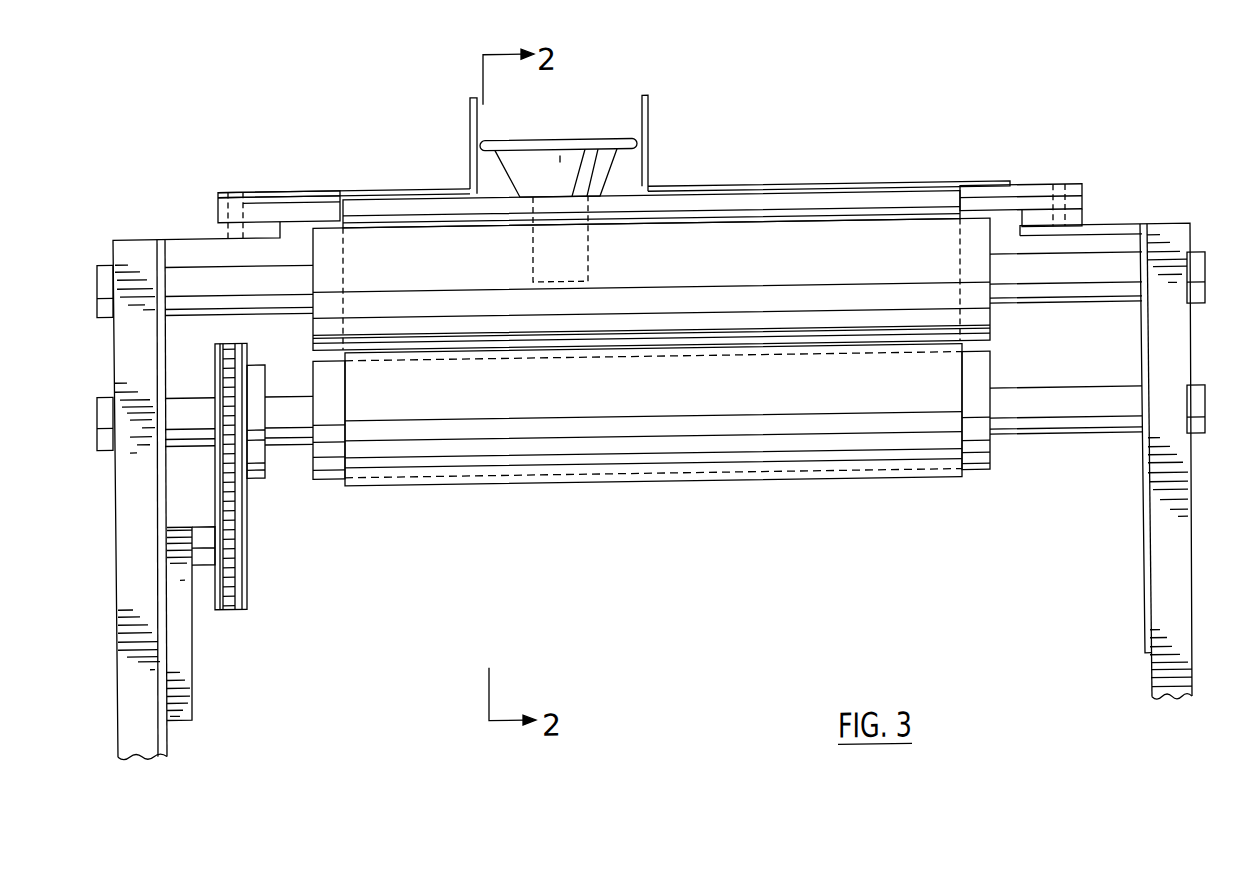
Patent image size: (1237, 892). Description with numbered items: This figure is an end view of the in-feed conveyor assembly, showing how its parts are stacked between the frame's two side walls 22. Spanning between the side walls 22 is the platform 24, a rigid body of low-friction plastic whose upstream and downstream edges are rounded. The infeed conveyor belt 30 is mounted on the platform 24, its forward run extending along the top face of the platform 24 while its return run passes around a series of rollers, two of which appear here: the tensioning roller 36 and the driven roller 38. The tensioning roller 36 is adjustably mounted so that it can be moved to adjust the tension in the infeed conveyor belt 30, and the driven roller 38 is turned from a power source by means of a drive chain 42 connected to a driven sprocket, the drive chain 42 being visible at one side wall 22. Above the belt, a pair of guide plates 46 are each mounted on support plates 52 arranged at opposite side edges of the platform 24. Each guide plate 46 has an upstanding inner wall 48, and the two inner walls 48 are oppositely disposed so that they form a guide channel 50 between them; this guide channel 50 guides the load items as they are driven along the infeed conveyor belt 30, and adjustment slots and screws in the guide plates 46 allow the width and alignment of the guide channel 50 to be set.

The side walls 22 is at (128, 670).
The platform 24 is at (1045, 216).
The infeed conveyor belt 30 is at (865, 211).
The tensioning roller 36 is at (982, 332).
The driven roller 38 is at (980, 467).
The drive chain 42 is at (243, 524).
The guide plates 46 is at (375, 194).
The upstanding inner wall 48 is at (470, 127).
The guide channel 50 is at (578, 129).
The support plates 52 is at (238, 196).